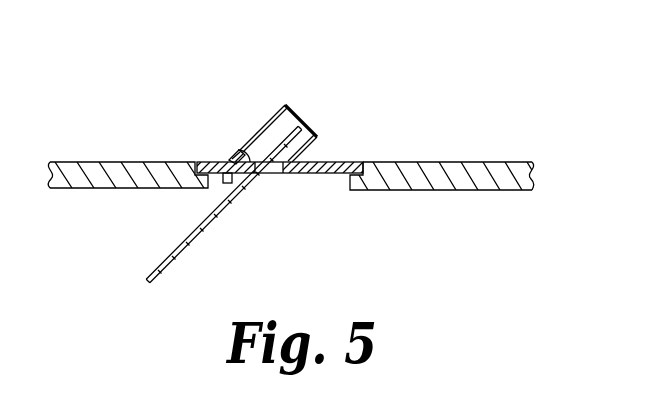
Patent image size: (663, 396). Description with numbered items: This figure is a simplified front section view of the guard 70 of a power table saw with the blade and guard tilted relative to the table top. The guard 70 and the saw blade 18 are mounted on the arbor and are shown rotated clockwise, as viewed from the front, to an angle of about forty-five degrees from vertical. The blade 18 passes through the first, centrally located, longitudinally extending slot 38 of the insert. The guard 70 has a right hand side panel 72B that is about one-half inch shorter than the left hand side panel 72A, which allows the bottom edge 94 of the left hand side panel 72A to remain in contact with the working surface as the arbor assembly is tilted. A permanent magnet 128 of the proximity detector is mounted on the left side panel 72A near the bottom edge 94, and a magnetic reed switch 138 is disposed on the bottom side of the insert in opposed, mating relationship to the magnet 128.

The saw blade 18 is at (202, 230).
The first longitudinally extending slot 38 is at (243, 148).
The guard 70 is at (311, 107).
The left hand side panel 72A is at (262, 128).
The right hand side panel 72B is at (308, 152).
The bottom edge 94 is at (230, 162).
The permanent magnet 128 is at (233, 153).
The magnetic reed switch 138 is at (228, 184).